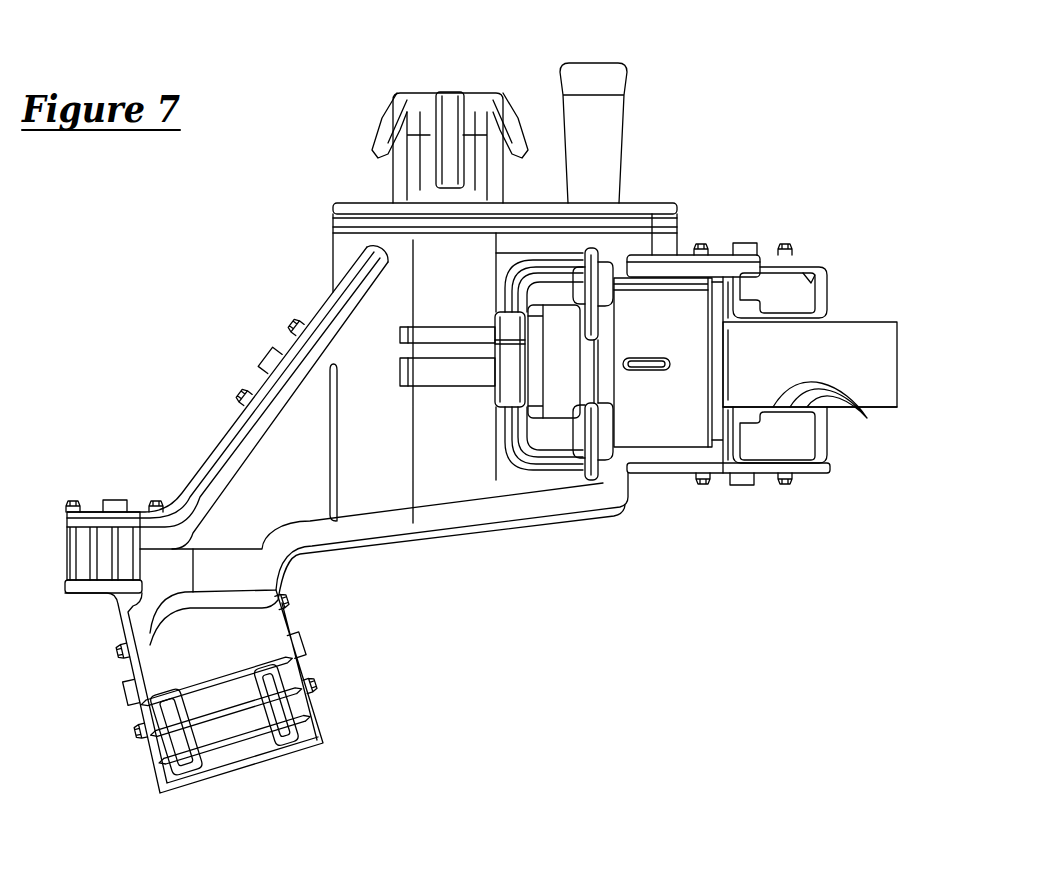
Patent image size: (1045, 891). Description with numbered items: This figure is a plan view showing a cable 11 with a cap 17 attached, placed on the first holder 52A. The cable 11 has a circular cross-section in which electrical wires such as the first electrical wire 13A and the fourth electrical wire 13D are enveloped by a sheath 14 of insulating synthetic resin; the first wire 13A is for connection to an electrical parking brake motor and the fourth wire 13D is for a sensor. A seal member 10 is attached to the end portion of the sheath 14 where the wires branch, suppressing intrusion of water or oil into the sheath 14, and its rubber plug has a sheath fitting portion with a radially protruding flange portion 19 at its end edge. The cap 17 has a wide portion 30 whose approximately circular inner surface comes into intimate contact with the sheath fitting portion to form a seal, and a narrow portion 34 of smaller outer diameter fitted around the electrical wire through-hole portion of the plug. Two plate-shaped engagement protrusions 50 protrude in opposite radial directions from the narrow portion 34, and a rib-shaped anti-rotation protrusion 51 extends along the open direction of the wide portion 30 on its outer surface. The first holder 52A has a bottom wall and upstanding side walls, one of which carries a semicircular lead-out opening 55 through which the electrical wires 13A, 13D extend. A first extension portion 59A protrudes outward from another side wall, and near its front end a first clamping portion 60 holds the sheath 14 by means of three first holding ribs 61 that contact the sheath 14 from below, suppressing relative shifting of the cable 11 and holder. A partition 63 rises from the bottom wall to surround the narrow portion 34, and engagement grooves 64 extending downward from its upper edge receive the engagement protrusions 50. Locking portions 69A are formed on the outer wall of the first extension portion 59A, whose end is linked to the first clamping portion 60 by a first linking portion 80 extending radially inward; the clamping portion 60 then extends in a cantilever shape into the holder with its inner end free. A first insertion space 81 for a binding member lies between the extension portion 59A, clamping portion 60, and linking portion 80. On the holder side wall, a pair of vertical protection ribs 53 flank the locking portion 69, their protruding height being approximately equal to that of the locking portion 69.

The seal member 10 is at (543, 330).
The cable 11 is at (860, 330).
The first electrical wire 13A is at (400, 372).
The fourth electrical wire 13D is at (440, 330).
The sheath 14 is at (877, 327).
The cap 17 is at (650, 432).
The flange portion 19 is at (715, 433).
The wide portion 30 is at (675, 427).
The narrow portion 34 is at (557, 400).
The engagement protrusion 50 is at (597, 253).
The anti-rotation protrusion 51 is at (643, 362).
The first holder 52A is at (377, 493).
The protection rib 53 is at (290, 330).
The lead-out opening 55 is at (103, 535).
The first extension portion 59A is at (805, 474).
The first clamping portion 60 is at (813, 466).
The first holding rib 61 is at (858, 415).
The partition 63 is at (543, 267).
The engagement groove 64 is at (595, 340).
The locking portion 69 is at (262, 364).
The locking portion 69A is at (743, 243).
The first linking portion 80 is at (823, 287).
The first insertion space 81 is at (813, 273).